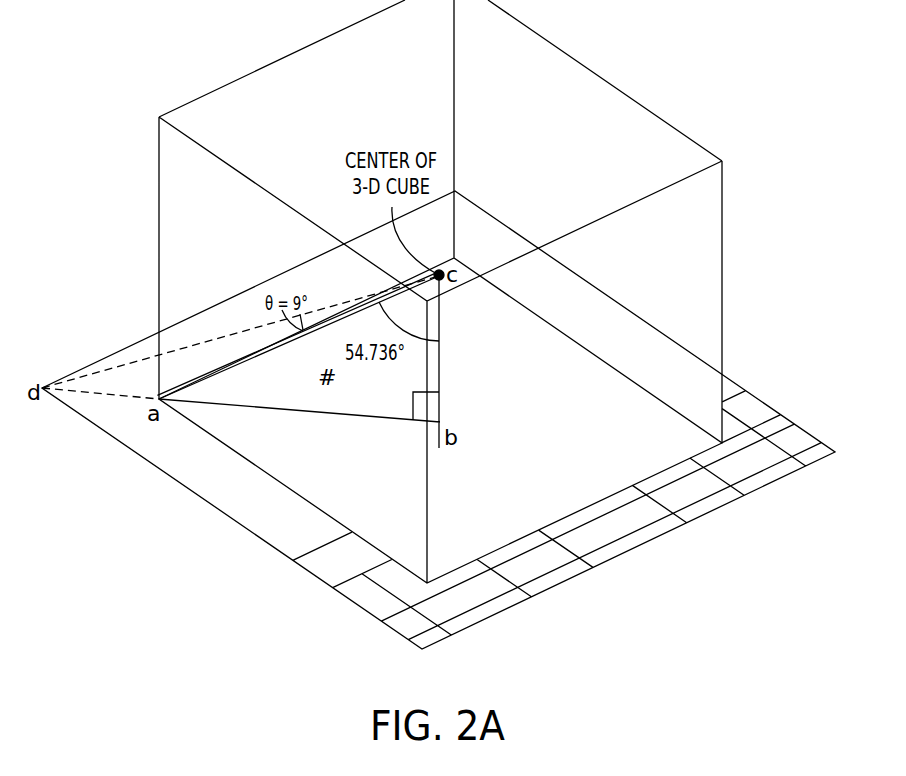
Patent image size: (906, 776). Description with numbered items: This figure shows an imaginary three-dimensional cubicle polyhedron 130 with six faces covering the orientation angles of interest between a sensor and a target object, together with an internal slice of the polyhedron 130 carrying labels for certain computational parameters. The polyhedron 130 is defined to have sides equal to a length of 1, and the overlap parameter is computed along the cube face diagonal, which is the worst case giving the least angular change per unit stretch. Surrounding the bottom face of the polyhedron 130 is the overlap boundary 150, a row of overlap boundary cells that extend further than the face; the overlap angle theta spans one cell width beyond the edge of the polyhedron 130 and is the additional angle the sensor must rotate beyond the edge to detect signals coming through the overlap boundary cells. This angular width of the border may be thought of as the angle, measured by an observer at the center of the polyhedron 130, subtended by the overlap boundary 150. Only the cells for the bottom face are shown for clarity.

The imaginary polyhedron 130 is at (451, 291).
The overlap boundary 150 is at (778, 418).
The cube edge of unit length 1 is at (732, 302).